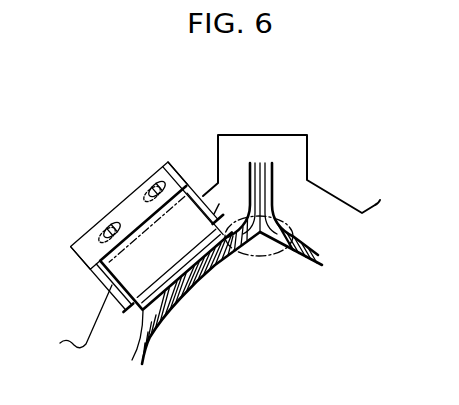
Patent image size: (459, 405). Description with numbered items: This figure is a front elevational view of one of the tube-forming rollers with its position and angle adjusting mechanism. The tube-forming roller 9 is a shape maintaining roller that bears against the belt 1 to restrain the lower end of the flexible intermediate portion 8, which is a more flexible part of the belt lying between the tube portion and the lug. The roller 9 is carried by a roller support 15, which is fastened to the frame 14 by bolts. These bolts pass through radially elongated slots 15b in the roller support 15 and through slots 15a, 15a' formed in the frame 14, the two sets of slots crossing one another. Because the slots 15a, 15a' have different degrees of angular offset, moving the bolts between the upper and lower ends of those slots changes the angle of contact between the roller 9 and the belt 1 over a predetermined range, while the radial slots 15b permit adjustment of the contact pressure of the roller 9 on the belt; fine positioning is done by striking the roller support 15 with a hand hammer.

The belt 1 is at (182, 300).
The flexible intermediate portion 8 is at (258, 256).
The tube-forming roller 9 is at (142, 313).
The frame 14 is at (363, 121).
The roller support 15 is at (115, 198).
The slot 15a is at (174, 165).
The slot 15a' is at (90, 279).
The radially elongated slot 15b is at (160, 178).